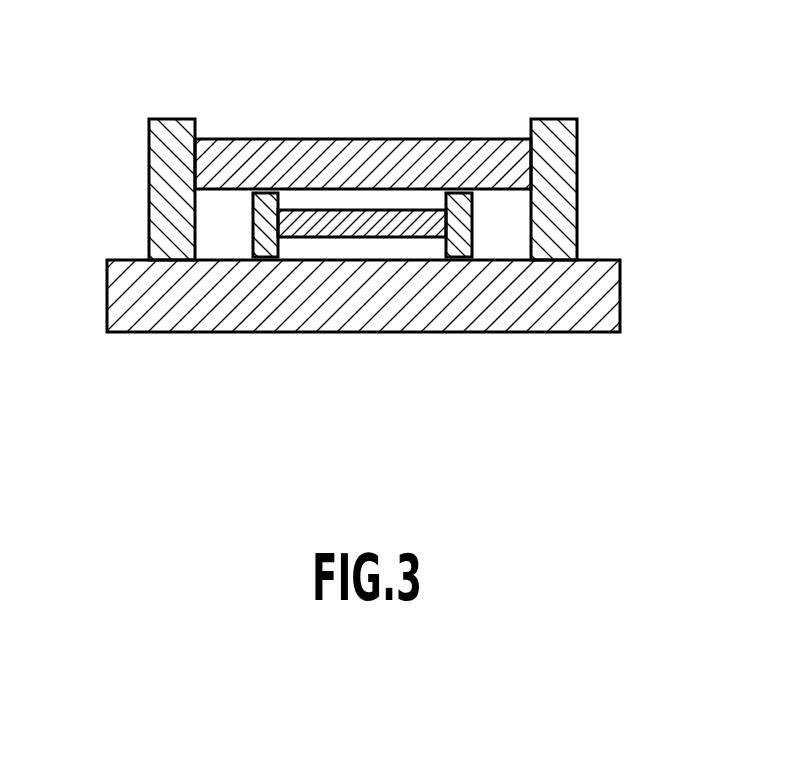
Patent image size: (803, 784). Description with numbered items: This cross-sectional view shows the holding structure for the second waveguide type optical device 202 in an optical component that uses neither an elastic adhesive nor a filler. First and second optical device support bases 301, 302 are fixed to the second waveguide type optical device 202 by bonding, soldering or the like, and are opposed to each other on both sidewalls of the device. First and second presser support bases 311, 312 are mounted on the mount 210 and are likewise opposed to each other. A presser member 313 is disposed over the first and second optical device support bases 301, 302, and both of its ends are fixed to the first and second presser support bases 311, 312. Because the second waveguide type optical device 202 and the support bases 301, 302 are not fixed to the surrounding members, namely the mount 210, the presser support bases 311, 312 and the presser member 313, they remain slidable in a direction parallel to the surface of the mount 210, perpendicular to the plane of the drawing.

The mount 210 is at (613, 302).
The second waveguide type optical device 202 is at (376, 217).
The first optical device support base 301 is at (266, 252).
The second optical device support base 302 is at (460, 252).
The first presser support base 311 is at (160, 180).
The second presser support base 312 is at (567, 192).
The presser member 313 is at (302, 148).